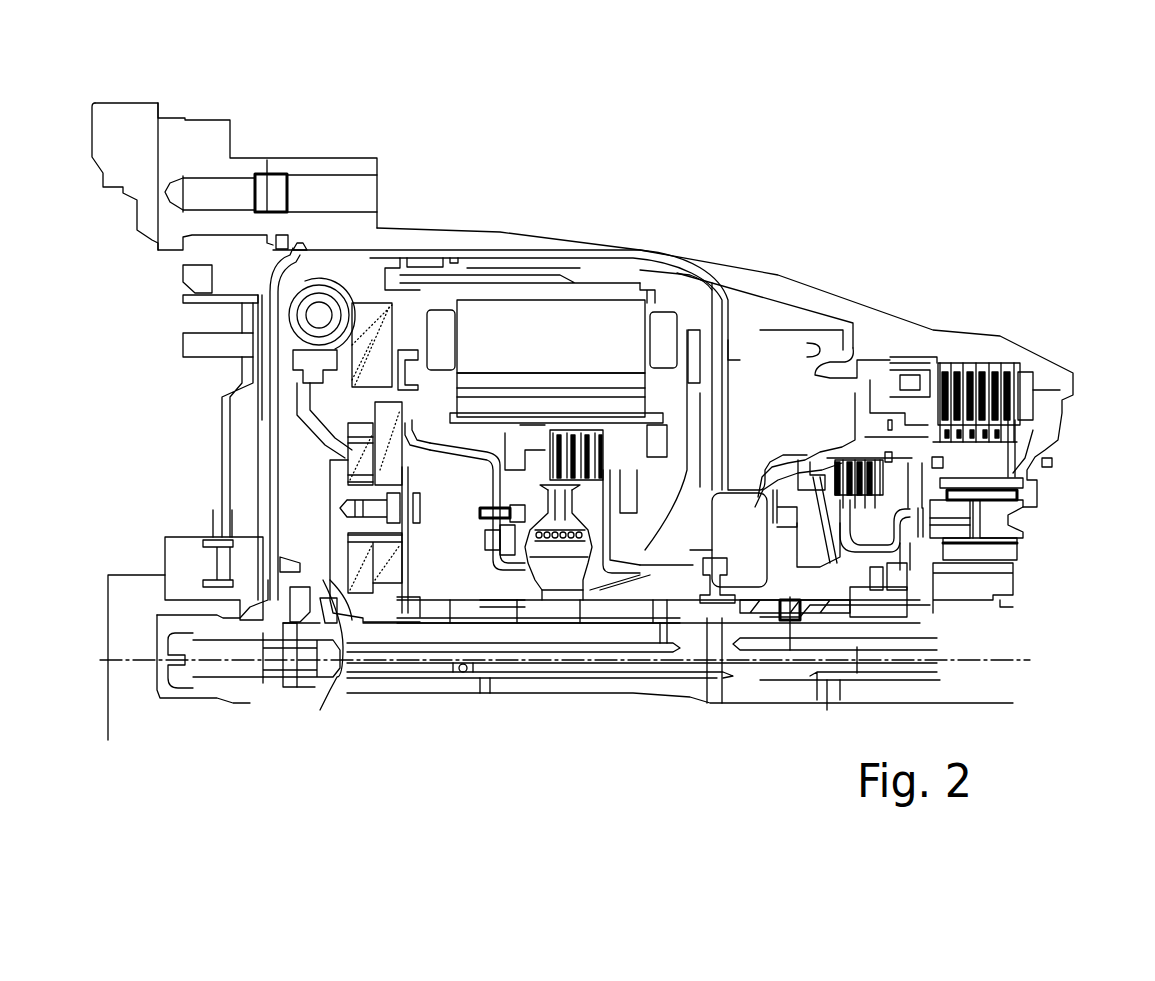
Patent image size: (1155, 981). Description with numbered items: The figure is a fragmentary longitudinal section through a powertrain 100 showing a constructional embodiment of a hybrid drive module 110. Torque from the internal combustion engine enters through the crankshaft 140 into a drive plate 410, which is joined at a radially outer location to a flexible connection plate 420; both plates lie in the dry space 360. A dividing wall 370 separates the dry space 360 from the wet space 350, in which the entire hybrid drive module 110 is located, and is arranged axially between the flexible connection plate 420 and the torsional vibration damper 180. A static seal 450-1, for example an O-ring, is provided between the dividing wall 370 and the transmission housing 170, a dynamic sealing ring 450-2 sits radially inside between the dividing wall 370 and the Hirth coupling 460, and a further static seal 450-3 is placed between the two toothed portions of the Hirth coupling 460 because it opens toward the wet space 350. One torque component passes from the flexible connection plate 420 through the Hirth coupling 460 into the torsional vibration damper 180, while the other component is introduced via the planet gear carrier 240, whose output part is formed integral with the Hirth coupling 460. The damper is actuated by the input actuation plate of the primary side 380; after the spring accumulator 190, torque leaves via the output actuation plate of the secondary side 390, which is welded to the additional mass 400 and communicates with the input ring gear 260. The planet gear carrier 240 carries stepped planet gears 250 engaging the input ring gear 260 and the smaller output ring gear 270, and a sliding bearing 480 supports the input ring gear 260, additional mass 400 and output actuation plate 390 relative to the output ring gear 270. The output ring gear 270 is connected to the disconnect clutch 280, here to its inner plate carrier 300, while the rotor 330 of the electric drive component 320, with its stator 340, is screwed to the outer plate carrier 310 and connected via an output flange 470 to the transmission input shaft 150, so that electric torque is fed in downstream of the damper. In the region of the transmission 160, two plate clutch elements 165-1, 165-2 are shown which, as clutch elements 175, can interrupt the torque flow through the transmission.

The powertrain 100 is at (855, 145).
The hybrid drive module 110 is at (713, 300).
The crankshaft 140 is at (128, 687).
The transmission input shaft 150 is at (633, 687).
The transmission 160 is at (960, 318).
The plate clutch element 165-1 is at (1000, 360).
The plate clutch element 165-2 is at (892, 375).
The transmission housing 170 is at (810, 302).
The clutch elements 175 is at (840, 455).
The torsional vibration damper 180 is at (335, 278).
The spring accumulator 190 is at (317, 322).
The planet gear carrier 240 is at (318, 683).
The planet gears 250 is at (368, 590).
The input ring gear 260 is at (360, 400).
The output ring gear 270 is at (405, 560).
The disconnect clutch 280 is at (550, 573).
The inner plate carrier 300 is at (526, 494).
The outer plate carrier 310 is at (617, 403).
The electric drive component 320 is at (536, 310).
The rotor 330 is at (745, 335).
The stator 340 is at (592, 320).
The wet space 350 is at (705, 288).
The dry space 360 is at (215, 243).
The dividing wall 370 is at (273, 383).
The input actuation plate of the primary side 380 is at (318, 285).
The output actuation plate of the secondary side 390 is at (308, 327).
The additional mass 400 is at (362, 312).
The drive plate 410 is at (223, 465).
The flexible connection plate 420 is at (253, 415).
The static seal 450-1 is at (303, 240).
The dynamic sealing ring 450-2 is at (303, 560).
The static seal 450-3 is at (303, 597).
The Hirth coupling 460 is at (297, 597).
The output flange 470 is at (437, 610).
The sliding bearing 480 is at (380, 410).